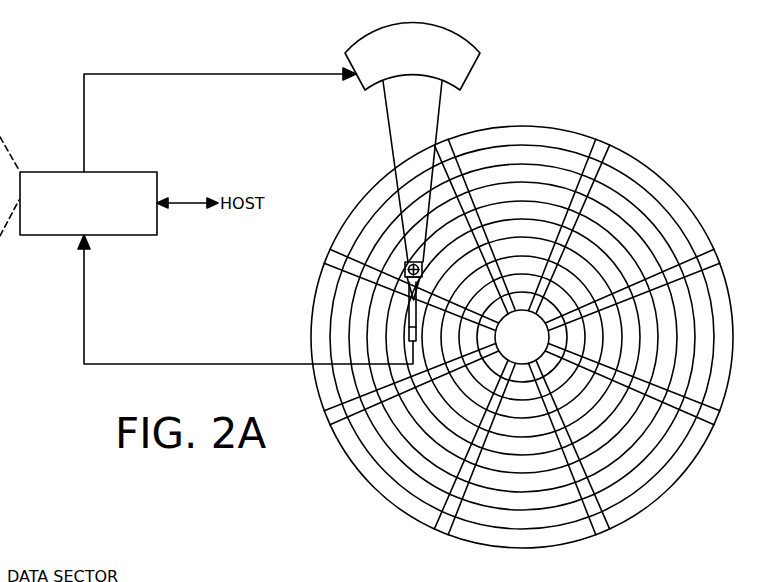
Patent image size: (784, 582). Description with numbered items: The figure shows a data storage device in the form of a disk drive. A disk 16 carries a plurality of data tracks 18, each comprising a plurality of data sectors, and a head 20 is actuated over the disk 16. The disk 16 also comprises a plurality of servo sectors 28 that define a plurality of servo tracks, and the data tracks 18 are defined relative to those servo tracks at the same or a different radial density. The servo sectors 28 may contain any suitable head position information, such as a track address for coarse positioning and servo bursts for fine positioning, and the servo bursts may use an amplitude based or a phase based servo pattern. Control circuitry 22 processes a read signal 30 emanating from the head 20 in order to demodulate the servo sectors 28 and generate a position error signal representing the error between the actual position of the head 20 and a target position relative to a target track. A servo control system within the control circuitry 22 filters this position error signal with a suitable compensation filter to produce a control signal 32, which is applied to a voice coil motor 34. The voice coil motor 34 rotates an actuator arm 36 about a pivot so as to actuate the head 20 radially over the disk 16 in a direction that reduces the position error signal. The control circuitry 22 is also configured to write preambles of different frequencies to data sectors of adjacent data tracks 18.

The disk 16 is at (522, 316).
The data tracks 18 is at (505, 155).
The head 20 is at (406, 331).
The control circuitry 22 is at (124, 172).
The servo sectors 28 is at (524, 343).
The read signal 30 is at (235, 364).
The control signal 32 is at (84, 108).
The voice coil motor 34 is at (365, 91).
The actuator arm 36 is at (395, 135).